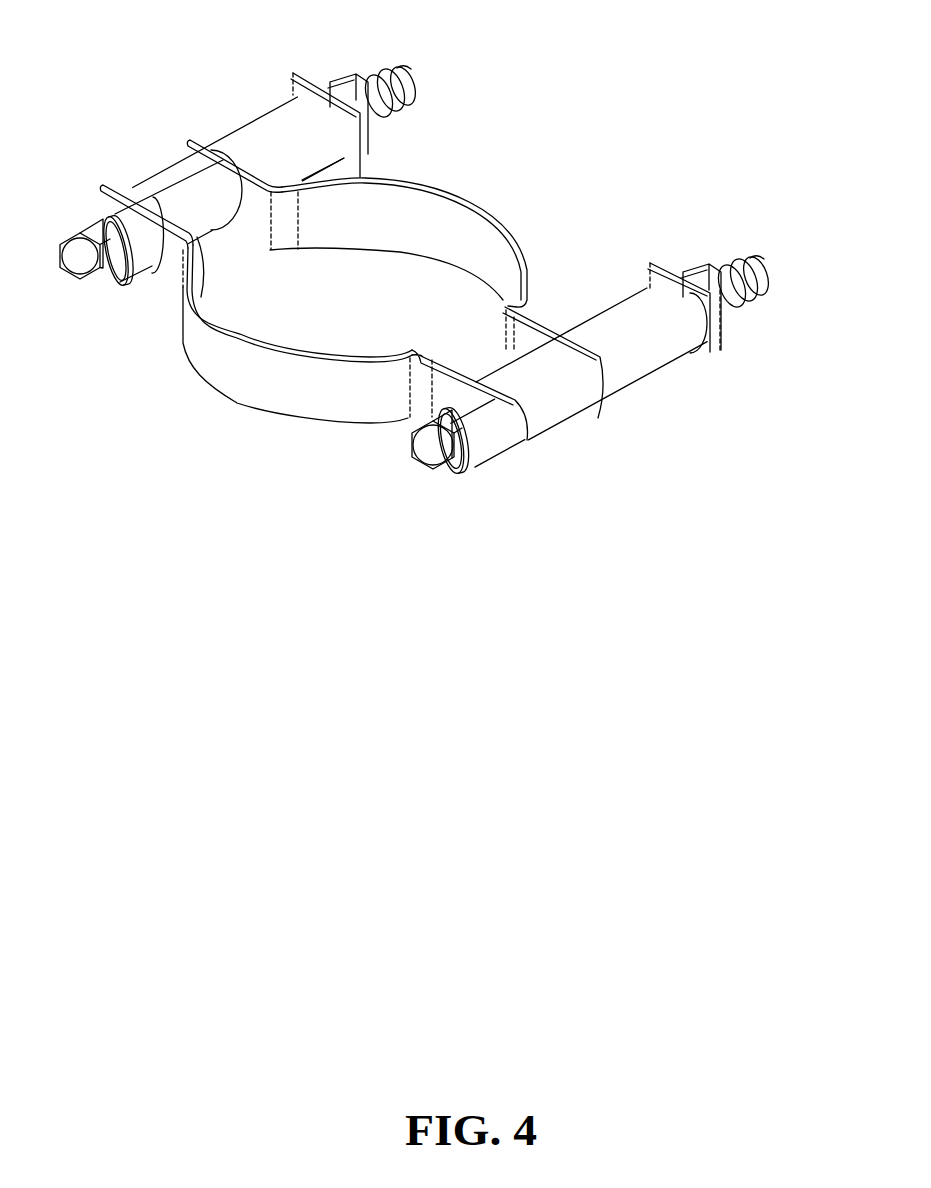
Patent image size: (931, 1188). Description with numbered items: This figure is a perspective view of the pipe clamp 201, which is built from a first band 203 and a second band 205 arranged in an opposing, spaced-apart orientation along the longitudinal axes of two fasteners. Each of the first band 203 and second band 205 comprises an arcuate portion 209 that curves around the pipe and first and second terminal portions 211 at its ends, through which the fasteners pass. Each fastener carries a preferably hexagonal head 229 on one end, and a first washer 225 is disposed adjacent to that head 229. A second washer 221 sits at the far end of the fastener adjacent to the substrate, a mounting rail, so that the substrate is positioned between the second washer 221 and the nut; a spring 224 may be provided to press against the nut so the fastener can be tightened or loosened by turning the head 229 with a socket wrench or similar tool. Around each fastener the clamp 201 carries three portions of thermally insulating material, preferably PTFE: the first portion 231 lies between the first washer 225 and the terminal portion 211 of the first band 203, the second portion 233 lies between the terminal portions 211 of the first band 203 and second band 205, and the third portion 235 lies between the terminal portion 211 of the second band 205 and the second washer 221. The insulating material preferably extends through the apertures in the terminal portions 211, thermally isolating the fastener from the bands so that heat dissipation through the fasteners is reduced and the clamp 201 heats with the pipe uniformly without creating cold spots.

The pipe clamp 201 is at (435, 269).
The first band 203 is at (523, 187).
The second band 205 is at (197, 428).
The arcuate portion 209 is at (455, 198).
The terminal portions 211 is at (176, 258).
The second washer 221 is at (302, 72).
The spring 224 is at (770, 288).
The first washer 225 is at (65, 226).
The head 229 is at (423, 450).
The first portion of thermally insulating material 231 is at (488, 462).
The second portion of thermally insulating material 233 is at (558, 430).
The third portion of thermally insulating material 235 is at (655, 377).